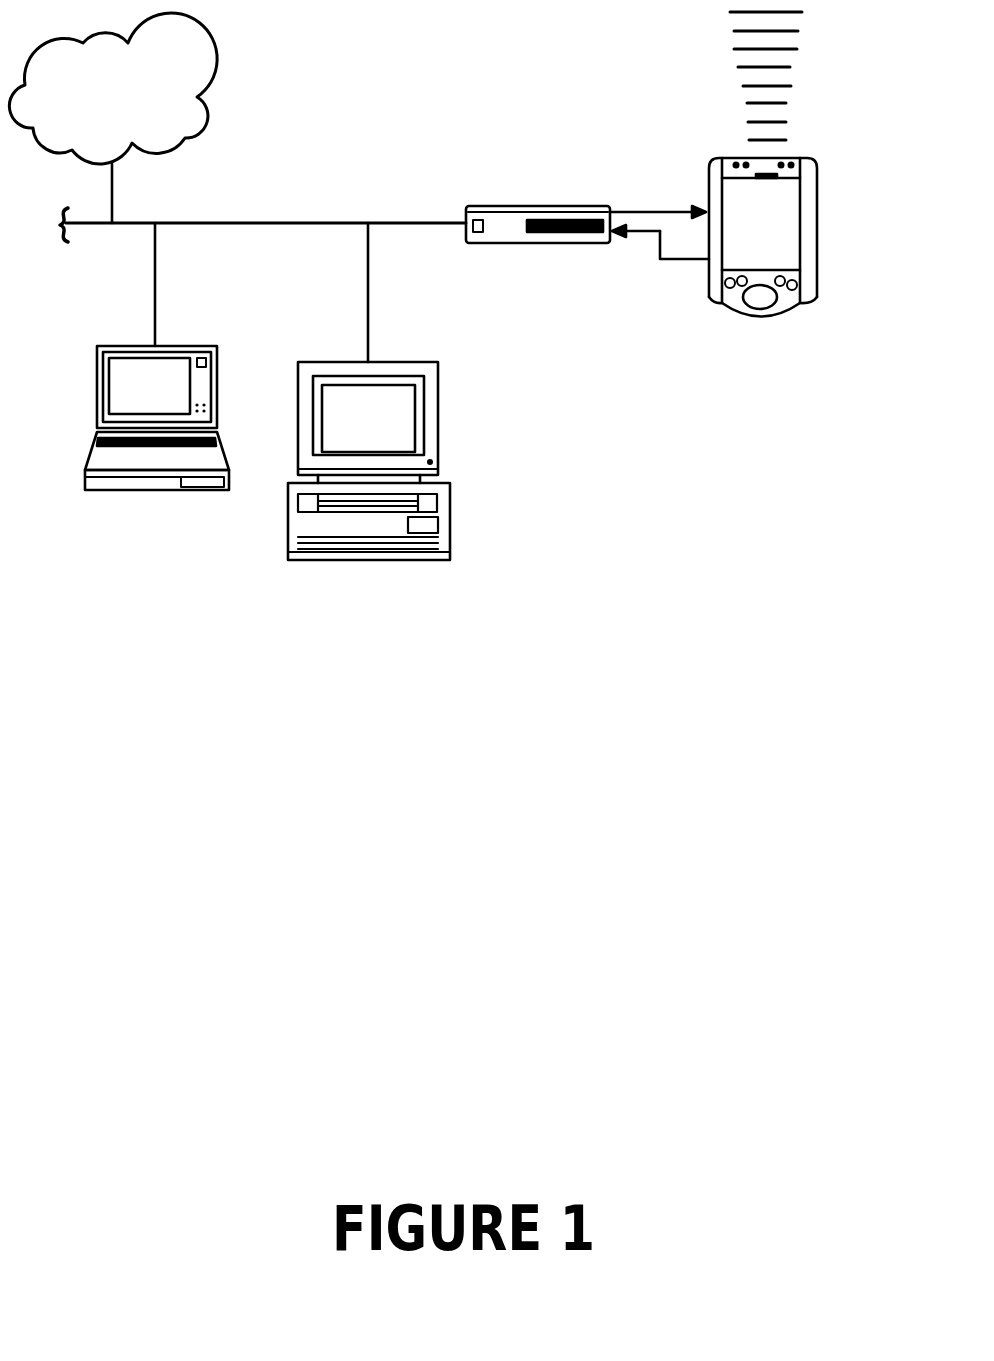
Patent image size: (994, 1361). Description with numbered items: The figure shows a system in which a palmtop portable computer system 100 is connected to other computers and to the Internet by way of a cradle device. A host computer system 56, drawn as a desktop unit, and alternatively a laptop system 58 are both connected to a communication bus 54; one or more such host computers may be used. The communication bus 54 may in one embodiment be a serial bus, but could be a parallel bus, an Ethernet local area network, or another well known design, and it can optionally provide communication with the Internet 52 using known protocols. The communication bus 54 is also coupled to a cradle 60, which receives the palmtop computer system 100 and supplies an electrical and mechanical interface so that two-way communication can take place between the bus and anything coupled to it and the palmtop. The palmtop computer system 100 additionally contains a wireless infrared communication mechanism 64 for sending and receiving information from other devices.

The Internet 52 is at (124, 125).
The communication bus 54 is at (313, 223).
The host computer system 56 is at (367, 422).
The laptop system 58 is at (152, 387).
The cradle 60 is at (587, 256).
The wireless infrared communication mechanism 64 is at (818, 71).
The palmtop portable computer system 100 is at (766, 280).